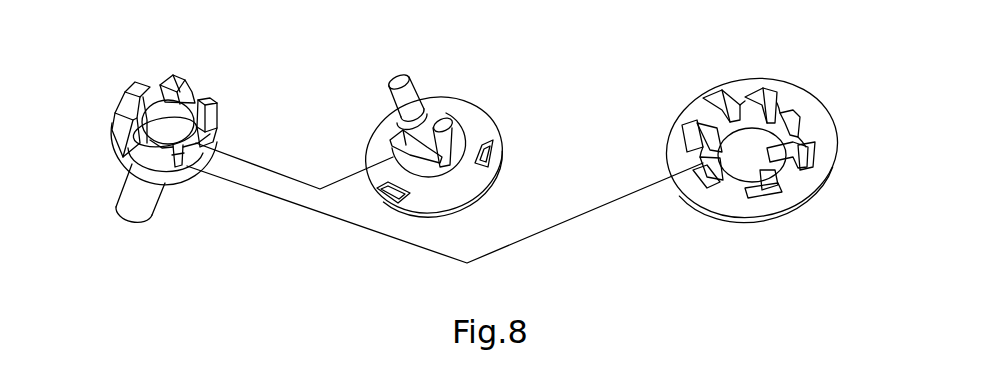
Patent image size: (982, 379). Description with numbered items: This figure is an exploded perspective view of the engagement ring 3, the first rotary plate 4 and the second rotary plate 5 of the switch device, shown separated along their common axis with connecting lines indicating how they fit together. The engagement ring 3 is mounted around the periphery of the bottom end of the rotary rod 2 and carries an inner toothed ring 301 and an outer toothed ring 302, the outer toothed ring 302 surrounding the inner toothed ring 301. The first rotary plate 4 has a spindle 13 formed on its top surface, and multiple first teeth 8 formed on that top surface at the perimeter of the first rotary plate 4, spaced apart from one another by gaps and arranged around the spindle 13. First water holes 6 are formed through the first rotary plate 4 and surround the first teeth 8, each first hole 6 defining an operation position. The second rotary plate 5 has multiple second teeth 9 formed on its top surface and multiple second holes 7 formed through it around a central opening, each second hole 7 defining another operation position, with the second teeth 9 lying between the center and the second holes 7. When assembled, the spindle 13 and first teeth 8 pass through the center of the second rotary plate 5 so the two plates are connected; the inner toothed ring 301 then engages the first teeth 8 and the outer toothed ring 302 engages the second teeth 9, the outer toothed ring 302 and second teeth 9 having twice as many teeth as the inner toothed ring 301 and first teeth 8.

The rotary rod 2 is at (128, 207).
The engagement ring 3 is at (160, 73).
The inner toothed ring 301 is at (190, 108).
The outer toothed ring 302 is at (125, 85).
The first rotary plate 4 is at (472, 115).
The spindle 13 is at (390, 83).
The first teeth 8 is at (390, 140).
The first water holes 6 is at (410, 197).
The second rotary plate 5 is at (808, 110).
The second teeth 9 is at (707, 115).
The second holes 7 is at (806, 150).